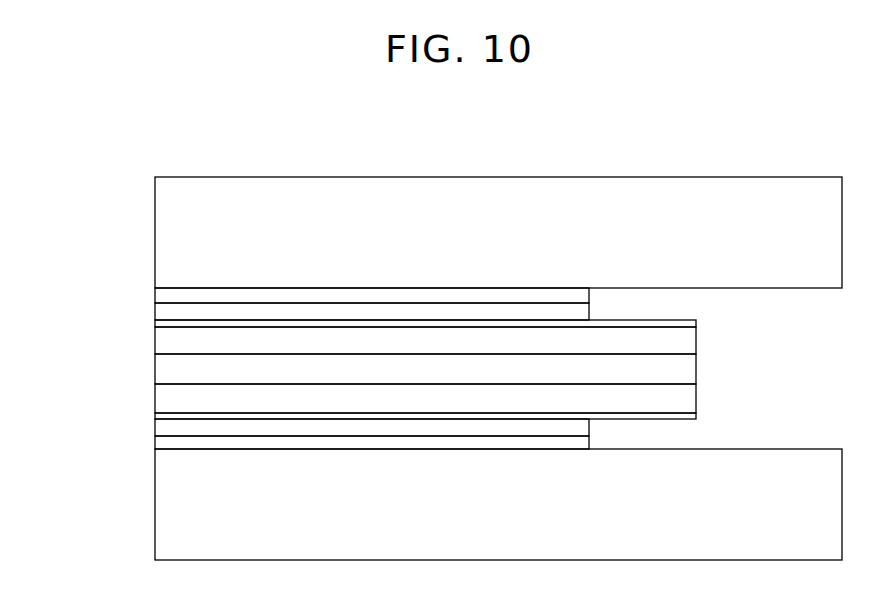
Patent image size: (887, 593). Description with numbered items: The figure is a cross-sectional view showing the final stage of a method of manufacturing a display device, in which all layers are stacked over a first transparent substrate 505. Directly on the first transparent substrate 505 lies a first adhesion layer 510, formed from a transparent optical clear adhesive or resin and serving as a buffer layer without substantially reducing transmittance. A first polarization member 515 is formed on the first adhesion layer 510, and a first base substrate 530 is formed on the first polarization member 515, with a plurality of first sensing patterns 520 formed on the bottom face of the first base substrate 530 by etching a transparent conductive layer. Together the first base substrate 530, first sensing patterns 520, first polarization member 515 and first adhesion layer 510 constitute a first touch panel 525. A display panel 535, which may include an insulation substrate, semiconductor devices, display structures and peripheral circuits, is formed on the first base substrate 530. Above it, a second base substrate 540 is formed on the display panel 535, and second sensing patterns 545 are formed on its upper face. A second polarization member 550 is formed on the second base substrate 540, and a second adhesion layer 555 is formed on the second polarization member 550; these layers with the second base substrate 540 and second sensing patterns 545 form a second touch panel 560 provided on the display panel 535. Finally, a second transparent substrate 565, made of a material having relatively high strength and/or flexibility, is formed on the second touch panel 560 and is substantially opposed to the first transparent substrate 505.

The first transparent substrate 505 is at (155, 501).
The first adhesion layer 510 is at (155, 443).
The first polarization member 515 is at (155, 428).
The first sensing patterns 520 is at (155, 416).
The first touch panel 525 is at (73, 384).
The first base substrate 530 is at (155, 398).
The display panel 535 is at (155, 369).
The second base substrate 540 is at (155, 340).
The second sensing patterns 545 is at (155, 323).
The second polarization member 550 is at (155, 311).
The second adhesion layer 555 is at (155, 295).
The second touch panel 560 is at (73, 268).
The second transparent substrate 565 is at (155, 233).